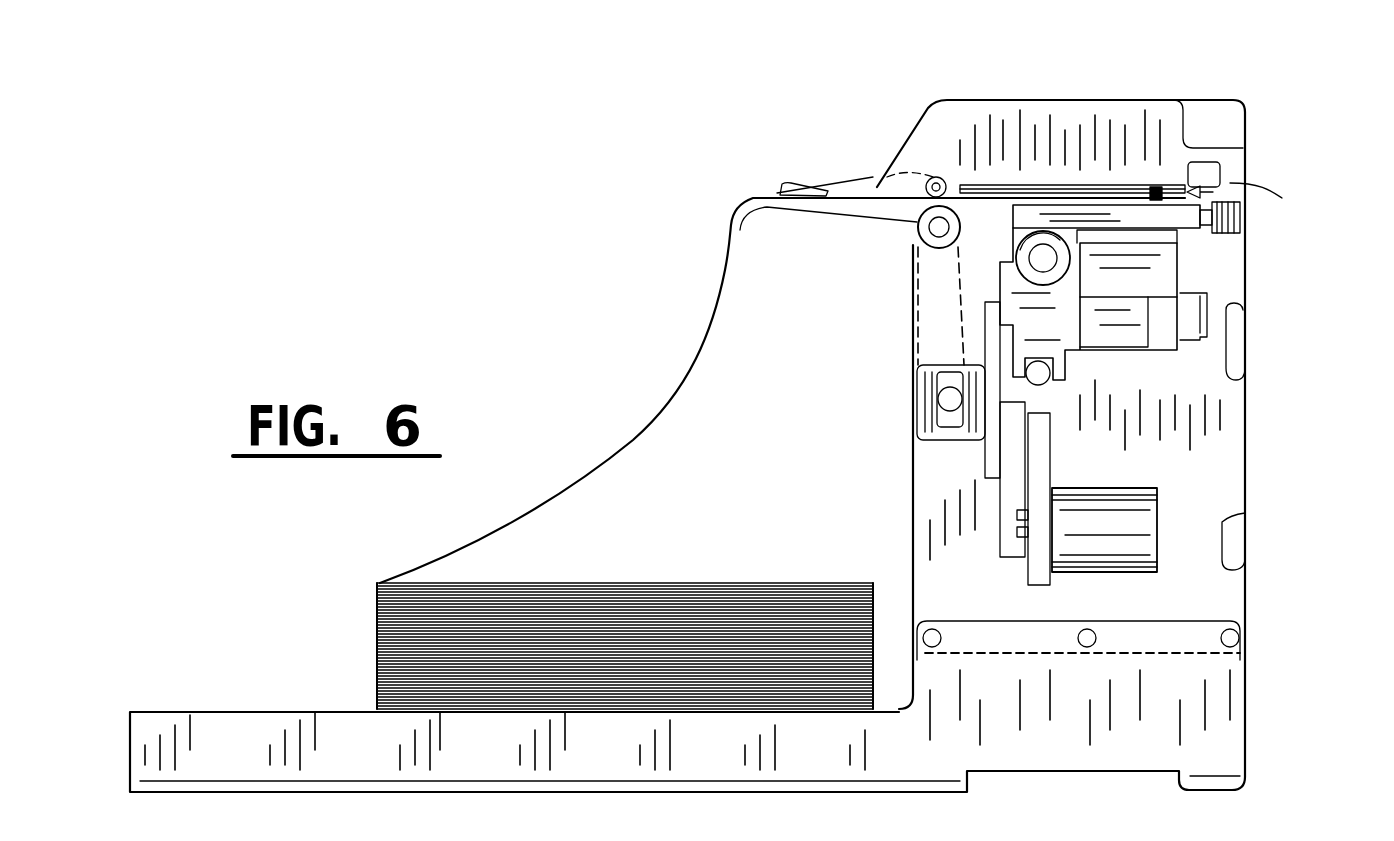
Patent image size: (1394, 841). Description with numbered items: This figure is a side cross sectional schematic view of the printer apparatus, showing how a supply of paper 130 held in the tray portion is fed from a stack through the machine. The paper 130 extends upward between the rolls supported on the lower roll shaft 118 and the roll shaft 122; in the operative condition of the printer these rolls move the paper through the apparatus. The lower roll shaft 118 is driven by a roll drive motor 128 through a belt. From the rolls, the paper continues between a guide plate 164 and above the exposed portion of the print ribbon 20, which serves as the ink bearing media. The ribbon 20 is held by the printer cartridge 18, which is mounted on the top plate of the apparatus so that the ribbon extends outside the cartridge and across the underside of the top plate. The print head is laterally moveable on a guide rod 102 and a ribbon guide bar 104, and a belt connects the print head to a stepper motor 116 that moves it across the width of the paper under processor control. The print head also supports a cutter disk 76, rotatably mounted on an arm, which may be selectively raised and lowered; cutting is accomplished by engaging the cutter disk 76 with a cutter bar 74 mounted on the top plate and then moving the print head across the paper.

The printer cartridge 18 is at (973, 117).
The print ribbon 20 is at (1160, 197).
The cutter bar 74 is at (1207, 173).
The cutter disk 76 is at (1227, 236).
The guide rod 102 is at (1047, 257).
The ribbon guide bar 104 is at (1053, 378).
The stepper motor 116 is at (1145, 513).
The lower roll shaft 118 is at (918, 223).
The roll shaft 122 is at (935, 177).
The roll drive motor 128 is at (918, 410).
The paper 130 is at (633, 440).
The guide plate 164 is at (1107, 196).